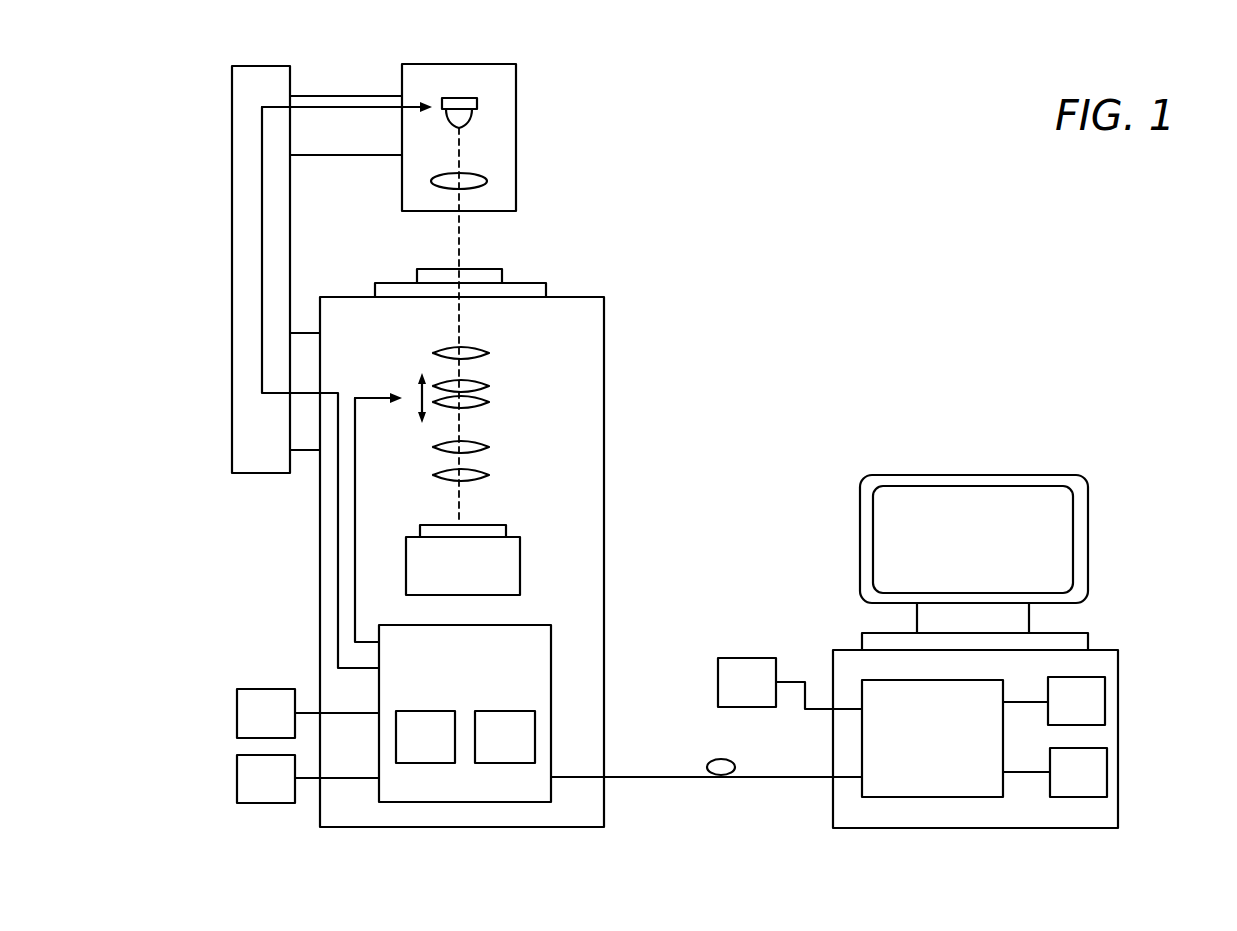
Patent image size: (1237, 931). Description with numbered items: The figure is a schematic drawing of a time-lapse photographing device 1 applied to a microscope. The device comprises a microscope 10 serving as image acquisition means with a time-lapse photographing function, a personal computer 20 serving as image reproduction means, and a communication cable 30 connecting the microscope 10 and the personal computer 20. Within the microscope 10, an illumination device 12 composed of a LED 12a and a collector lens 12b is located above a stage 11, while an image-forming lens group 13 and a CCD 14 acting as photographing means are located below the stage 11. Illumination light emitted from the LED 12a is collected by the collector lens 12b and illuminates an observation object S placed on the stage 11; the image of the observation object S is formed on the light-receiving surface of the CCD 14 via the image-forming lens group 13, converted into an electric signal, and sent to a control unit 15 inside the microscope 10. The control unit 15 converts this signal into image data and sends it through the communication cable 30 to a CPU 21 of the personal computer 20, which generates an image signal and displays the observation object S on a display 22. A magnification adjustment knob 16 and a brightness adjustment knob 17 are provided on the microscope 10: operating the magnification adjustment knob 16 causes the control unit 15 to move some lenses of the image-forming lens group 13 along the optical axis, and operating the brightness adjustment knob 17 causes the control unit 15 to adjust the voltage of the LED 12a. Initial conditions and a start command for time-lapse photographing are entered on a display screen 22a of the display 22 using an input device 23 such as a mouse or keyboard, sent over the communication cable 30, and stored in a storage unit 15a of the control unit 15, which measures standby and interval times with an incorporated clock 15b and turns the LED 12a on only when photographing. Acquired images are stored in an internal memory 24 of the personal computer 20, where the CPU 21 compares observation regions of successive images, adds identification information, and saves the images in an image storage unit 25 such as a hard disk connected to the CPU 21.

The time-lapse photographing device 1 is at (868, 127).
The microscope 10 is at (667, 278).
The stage 11 is at (537, 281).
The illumination device 12 is at (487, 63).
The LED 12a is at (477, 104).
The collector lens 12b is at (488, 178).
The image-forming lens group 13 is at (510, 347).
The CCD 14 is at (520, 555).
The control unit 15 is at (527, 625).
The storage unit 15a is at (447, 752).
The clock 15b is at (526, 752).
The magnification adjustment knob 16 is at (280, 731).
The brightness adjustment knob 17 is at (280, 797).
The personal computer 20 is at (1147, 466).
The CPU 21 is at (955, 798).
The display 22 is at (860, 532).
The display screen 22a is at (970, 497).
The input device 23 is at (790, 683).
The internal memory 24 is at (1092, 715).
The image storage unit 25 is at (1093, 787).
The communication cable 30 is at (657, 775).
The observation object S is at (483, 268).